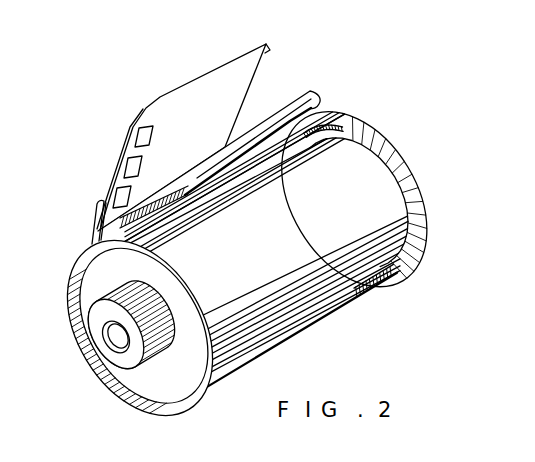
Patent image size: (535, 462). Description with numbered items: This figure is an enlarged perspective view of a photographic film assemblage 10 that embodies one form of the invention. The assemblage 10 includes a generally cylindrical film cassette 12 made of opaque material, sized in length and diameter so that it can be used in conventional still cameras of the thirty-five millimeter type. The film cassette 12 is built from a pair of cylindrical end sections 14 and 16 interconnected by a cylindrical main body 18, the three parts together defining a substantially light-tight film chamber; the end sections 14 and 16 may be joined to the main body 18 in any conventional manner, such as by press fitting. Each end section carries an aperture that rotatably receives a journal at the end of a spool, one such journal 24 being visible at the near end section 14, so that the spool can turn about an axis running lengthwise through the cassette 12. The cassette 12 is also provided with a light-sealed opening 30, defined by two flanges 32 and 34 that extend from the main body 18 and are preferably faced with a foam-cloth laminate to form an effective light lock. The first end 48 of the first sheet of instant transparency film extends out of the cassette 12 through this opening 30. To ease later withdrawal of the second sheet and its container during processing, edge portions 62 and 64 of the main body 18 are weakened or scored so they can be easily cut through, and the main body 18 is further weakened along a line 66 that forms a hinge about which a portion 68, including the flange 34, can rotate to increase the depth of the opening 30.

The photographic film assemblage 10 is at (287, 345).
The film cassette 12 is at (417, 176).
The end section 14 is at (157, 384).
The end section 16 is at (397, 150).
The main body 18 is at (340, 306).
The journal 24 is at (98, 316).
The opening 30 is at (303, 93).
The flange 32 is at (258, 113).
The flange 34 is at (277, 145).
The first end 48 is at (188, 82).
The edge portion 62 is at (157, 232).
The edge portion 64 is at (334, 124).
The line 66 is at (262, 188).
The portion 68 is at (200, 208).